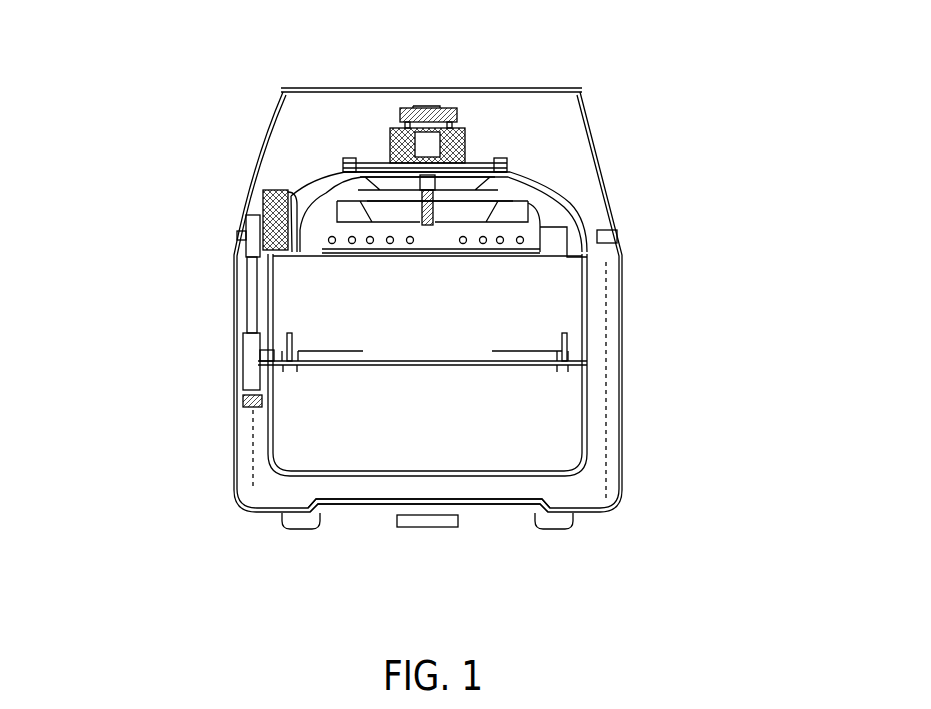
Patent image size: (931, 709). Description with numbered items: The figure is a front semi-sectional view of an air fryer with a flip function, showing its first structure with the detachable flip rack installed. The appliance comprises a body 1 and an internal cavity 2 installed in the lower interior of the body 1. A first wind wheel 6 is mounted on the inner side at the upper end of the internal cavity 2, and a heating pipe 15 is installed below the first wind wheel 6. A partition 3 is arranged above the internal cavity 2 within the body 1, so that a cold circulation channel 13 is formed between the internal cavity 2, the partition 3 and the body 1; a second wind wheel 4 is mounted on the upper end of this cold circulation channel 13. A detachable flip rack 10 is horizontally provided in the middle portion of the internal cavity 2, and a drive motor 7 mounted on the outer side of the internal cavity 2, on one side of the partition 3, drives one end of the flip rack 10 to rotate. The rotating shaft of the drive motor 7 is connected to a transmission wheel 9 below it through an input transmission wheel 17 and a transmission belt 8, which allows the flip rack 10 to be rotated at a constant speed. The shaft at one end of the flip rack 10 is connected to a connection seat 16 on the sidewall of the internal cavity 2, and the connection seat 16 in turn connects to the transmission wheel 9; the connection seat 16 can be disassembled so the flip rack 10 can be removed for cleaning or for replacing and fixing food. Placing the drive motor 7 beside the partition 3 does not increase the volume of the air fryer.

The body 1 is at (621, 440).
The internal cavity 2 is at (583, 340).
The partition 3 is at (575, 198).
The second wind wheel 4 is at (467, 167).
The first wind wheel 6 is at (377, 220).
The drive motor 7 is at (262, 188).
The transmission belt 8 is at (253, 283).
The transmission wheel 9 is at (256, 346).
The detachable flip rack 10 is at (236, 450).
The cold circulation channel 13 is at (587, 489).
The heating pipe 15 is at (512, 247).
The connection seat 16 is at (243, 360).
The input transmission wheel 17 is at (238, 218).